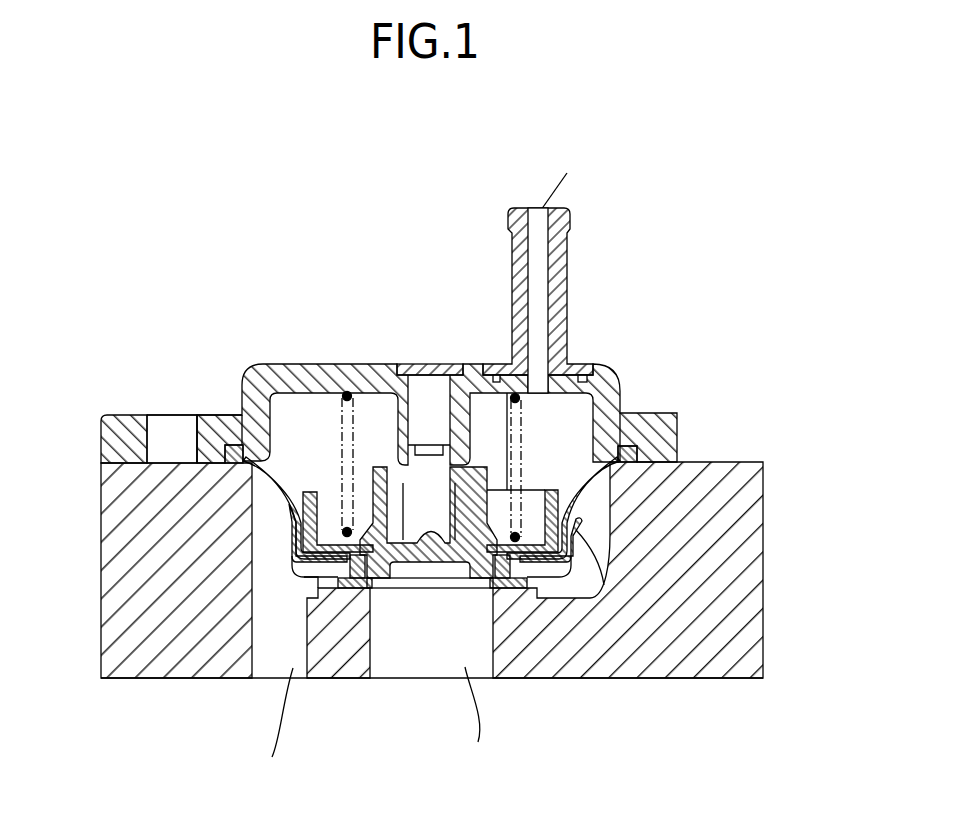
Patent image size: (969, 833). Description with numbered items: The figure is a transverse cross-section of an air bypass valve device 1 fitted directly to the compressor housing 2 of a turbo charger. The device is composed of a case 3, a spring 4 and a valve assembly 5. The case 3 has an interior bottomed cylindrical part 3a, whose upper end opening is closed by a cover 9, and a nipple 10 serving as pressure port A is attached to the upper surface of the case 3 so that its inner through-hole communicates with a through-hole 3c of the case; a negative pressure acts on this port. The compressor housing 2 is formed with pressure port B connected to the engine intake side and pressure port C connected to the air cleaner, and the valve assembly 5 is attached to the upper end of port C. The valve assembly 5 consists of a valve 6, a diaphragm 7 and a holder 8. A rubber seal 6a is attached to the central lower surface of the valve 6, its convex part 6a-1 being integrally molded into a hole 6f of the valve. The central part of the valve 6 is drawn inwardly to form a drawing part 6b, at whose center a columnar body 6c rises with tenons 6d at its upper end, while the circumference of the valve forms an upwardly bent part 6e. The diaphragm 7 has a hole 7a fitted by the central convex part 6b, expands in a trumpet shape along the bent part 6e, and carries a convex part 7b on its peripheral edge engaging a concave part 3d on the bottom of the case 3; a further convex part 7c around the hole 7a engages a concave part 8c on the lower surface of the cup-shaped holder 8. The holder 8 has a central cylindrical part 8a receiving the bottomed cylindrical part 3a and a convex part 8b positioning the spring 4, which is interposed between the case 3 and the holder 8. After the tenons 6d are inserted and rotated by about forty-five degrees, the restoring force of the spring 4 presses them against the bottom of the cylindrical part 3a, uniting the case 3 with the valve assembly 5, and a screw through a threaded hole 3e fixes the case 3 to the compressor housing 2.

The air bypass valve device 1 is at (311, 279).
The compressor housing 2 is at (133, 577).
The case 3 is at (609, 366).
The bottomed cylindrical part 3a is at (486, 368).
The through-hole 3c is at (563, 378).
The concave part 3d is at (249, 442).
The threaded hole 3e is at (170, 450).
The spring 4 is at (313, 379).
The valve assembly 5 is at (801, 468).
The valve 6 is at (560, 573).
The rubber seal 6a is at (427, 582).
The convex part of the rubber seal 6a-1 is at (510, 565).
The drawing part 6b is at (457, 553).
The columnar body 6c is at (440, 478).
The tenons 6d is at (437, 380).
The upwardly bent part 6e is at (290, 548).
The hole 6f is at (318, 563).
The diaphragm 7 is at (580, 513).
The hole 7a is at (393, 560).
The convex part 7b is at (233, 467).
The convex part 7c is at (558, 562).
The holder 8 is at (602, 473).
The cylindrical part 8a is at (506, 500).
The convex part 8b is at (525, 522).
The concave part 8c is at (330, 522).
The cover 9 is at (422, 365).
The nipple 10 is at (566, 258).